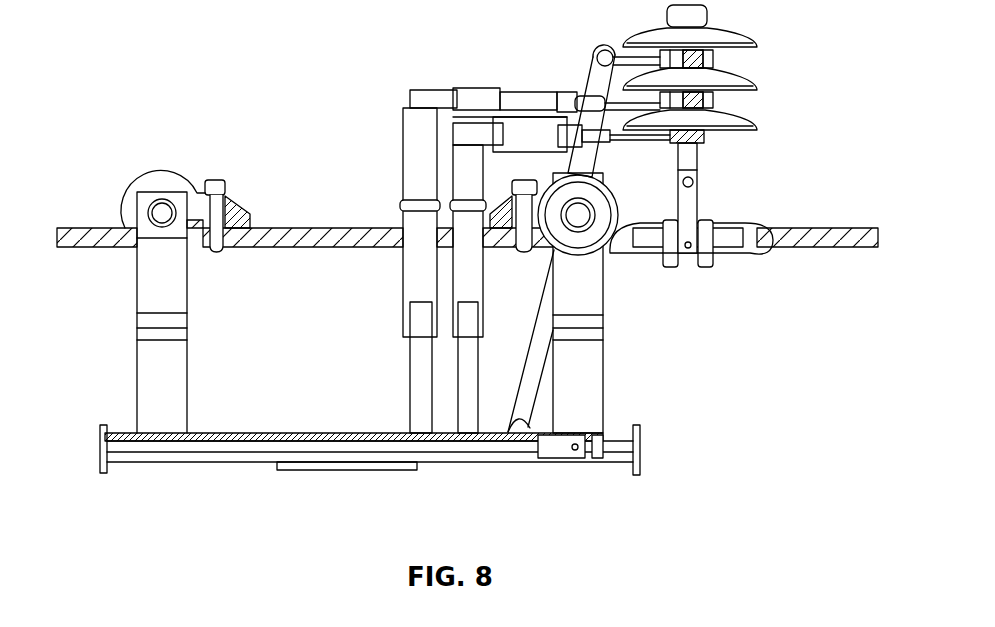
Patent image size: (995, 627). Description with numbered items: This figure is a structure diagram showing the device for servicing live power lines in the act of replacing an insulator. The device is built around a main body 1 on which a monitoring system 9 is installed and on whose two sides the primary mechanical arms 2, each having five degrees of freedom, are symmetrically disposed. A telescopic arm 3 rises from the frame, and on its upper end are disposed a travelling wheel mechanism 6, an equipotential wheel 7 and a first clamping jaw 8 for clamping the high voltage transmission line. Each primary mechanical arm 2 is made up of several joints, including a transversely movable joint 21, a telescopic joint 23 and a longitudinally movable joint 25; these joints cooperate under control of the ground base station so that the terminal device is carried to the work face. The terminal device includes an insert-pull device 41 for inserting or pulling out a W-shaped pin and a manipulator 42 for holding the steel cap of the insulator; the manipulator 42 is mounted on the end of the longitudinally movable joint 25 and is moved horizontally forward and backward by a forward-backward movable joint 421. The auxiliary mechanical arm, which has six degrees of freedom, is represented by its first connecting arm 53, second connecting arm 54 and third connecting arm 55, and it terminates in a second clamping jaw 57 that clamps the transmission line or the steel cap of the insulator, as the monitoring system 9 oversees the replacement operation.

The main body 1 is at (130, 453).
The primary mechanical arm 2 is at (497, 491).
The telescopic arm 3 is at (590, 368).
The travelling wheel mechanism 6 is at (134, 187).
The equipotential wheel 7 is at (232, 208).
The first clamping jaw 8 is at (230, 232).
The monitoring system 9 is at (343, 465).
The transversely movable joint 21 is at (362, 450).
The telescopic joint 23 is at (470, 378).
The longitudinally movable joint 25 is at (443, 100).
The insert-pull device 41 is at (700, 140).
The manipulator 42 is at (706, 67).
The first connecting arm 53 is at (533, 370).
The second connecting arm 54 is at (602, 82).
The third connecting arm 55 is at (600, 62).
The second clamping jaw 57 is at (722, 63).
The forward-backward movable joint 421 is at (557, 90).